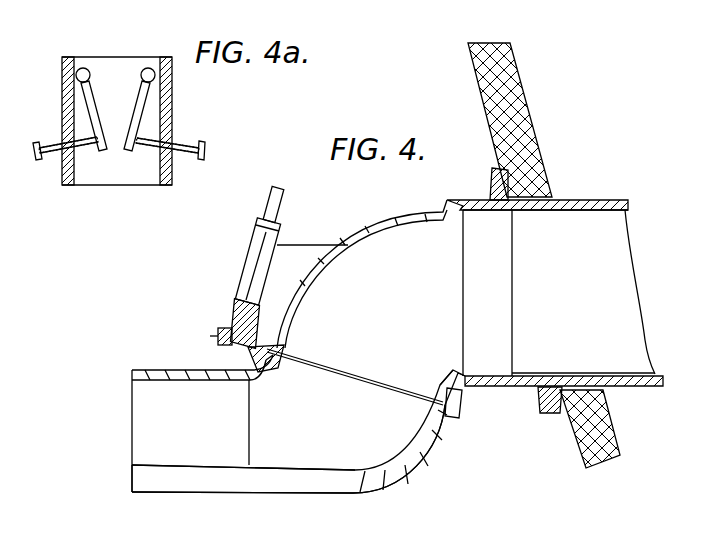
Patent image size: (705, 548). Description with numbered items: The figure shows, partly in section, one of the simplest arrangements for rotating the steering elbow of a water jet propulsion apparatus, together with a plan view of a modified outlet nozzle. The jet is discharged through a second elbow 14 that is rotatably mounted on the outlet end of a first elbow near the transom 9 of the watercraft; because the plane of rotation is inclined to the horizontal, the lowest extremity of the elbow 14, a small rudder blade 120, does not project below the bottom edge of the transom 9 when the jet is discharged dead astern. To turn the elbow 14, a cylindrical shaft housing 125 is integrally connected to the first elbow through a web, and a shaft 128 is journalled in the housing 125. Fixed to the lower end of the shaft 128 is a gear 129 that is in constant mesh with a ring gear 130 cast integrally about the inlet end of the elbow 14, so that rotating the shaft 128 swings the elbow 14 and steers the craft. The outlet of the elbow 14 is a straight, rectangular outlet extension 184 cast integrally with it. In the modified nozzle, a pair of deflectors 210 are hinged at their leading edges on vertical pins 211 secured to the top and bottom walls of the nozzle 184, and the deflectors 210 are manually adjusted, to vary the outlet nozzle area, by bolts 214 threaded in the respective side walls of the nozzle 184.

In FIG. 4, the transom 9 is at (493, 122).
In FIG. 4, the second elbow 14 is at (417, 433).
In FIG. 4, the rudder blade 120 is at (300, 488).
In FIG. 4, the shaft housing 125 is at (260, 243).
In FIG. 4, the shaft 128 is at (270, 205).
In FIG. 4, the gear 129 is at (222, 334).
In FIG. 4, the ring gear 130 is at (456, 405).
In FIG. 4A, the outlet extension 184 is at (162, 185).
In FIG. 4, the outlet extension 184 is at (132, 468).
In FIG. 4A, the deflectors 210 is at (142, 101).
In FIG. 4, the deflectors 210 is at (165, 392).
In FIG. 4A, the vertical pins 211 is at (145, 68).
In FIG. 4A, the bolts 214 is at (52, 142).